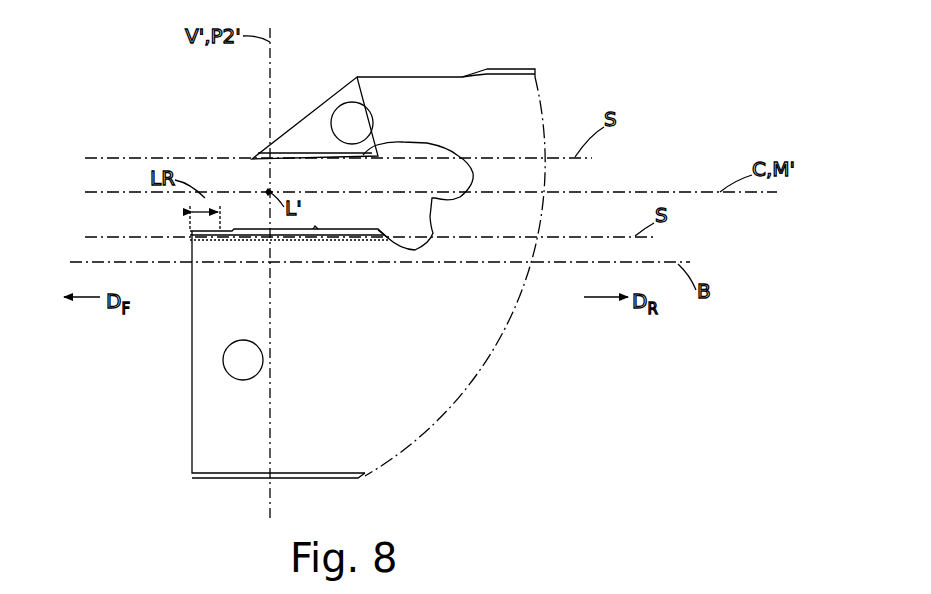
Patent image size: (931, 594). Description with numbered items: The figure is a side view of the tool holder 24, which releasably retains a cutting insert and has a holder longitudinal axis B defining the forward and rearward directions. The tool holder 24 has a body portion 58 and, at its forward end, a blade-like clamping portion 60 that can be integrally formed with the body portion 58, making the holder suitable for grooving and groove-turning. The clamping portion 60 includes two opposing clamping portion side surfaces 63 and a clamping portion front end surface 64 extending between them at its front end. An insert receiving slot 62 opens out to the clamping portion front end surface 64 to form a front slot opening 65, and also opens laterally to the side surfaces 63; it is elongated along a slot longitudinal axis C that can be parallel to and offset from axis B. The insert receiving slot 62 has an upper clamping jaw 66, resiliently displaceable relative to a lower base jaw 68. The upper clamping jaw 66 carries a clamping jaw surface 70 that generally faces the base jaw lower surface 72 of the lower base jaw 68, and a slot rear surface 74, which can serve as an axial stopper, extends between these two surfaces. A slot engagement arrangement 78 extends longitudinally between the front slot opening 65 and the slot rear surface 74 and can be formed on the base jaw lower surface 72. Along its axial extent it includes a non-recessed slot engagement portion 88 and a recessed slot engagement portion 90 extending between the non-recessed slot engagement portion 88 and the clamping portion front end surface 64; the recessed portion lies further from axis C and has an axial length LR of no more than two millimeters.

The tool holder 24 is at (162, 58).
The body portion 58 is at (470, 305).
The clamping portion 60 is at (352, 294).
The insert receiving slot 62 is at (376, 223).
The clamping portion side surfaces 63 is at (400, 100).
The clamping portion front end surface 64 is at (192, 313).
The front slot opening 65 is at (228, 182).
The upper clamping jaw 66 is at (321, 124).
The lower base jaw 68 is at (220, 318).
The clamping jaw surface 70 is at (348, 160).
The base jaw lower surface 72 is at (258, 219).
The slot rear surface 74 is at (430, 213).
The slot engagement arrangement 78 is at (305, 160).
The non-recessed slot engagement portion 88 is at (334, 248).
The recessed slot engagement portion 90 is at (206, 246).